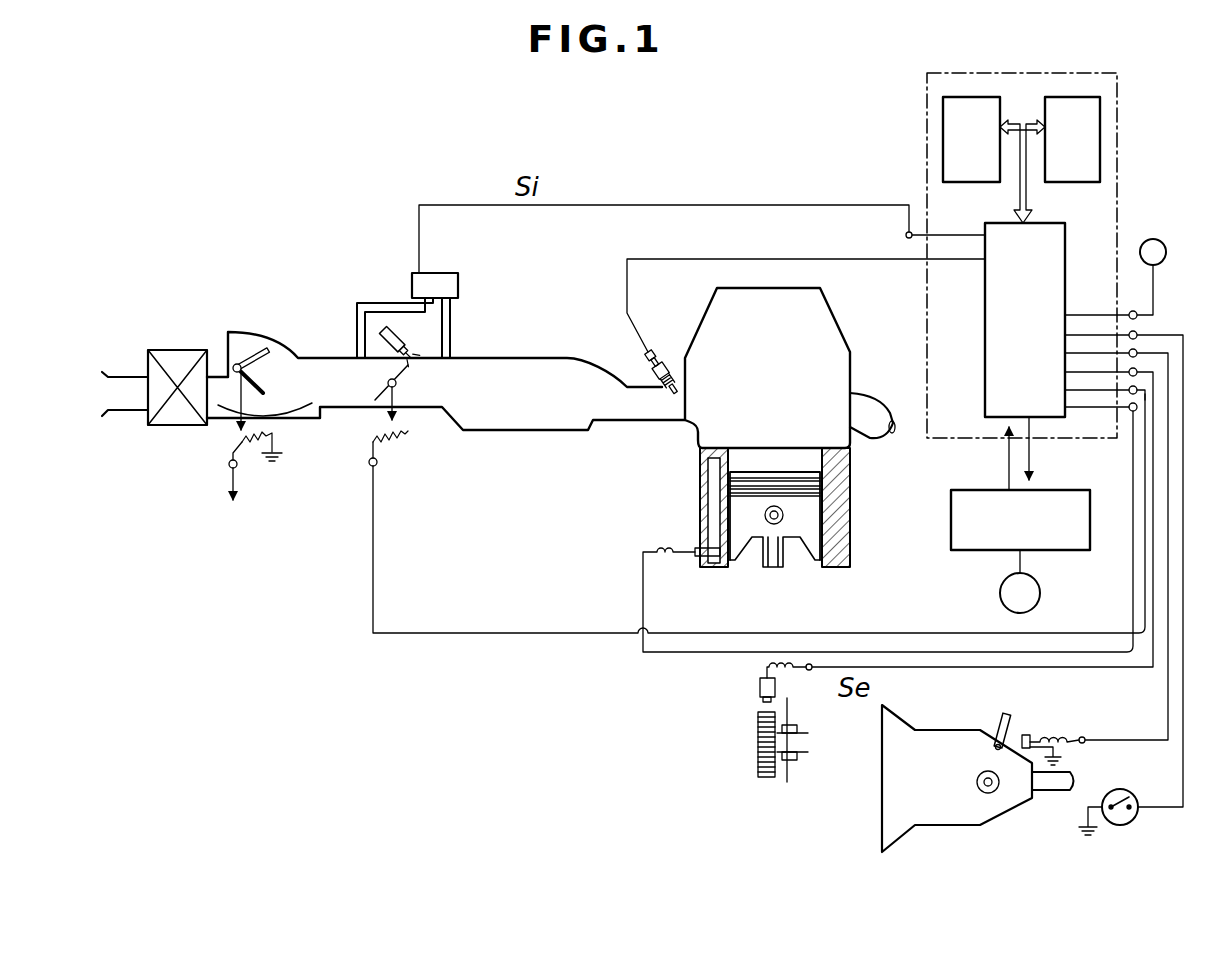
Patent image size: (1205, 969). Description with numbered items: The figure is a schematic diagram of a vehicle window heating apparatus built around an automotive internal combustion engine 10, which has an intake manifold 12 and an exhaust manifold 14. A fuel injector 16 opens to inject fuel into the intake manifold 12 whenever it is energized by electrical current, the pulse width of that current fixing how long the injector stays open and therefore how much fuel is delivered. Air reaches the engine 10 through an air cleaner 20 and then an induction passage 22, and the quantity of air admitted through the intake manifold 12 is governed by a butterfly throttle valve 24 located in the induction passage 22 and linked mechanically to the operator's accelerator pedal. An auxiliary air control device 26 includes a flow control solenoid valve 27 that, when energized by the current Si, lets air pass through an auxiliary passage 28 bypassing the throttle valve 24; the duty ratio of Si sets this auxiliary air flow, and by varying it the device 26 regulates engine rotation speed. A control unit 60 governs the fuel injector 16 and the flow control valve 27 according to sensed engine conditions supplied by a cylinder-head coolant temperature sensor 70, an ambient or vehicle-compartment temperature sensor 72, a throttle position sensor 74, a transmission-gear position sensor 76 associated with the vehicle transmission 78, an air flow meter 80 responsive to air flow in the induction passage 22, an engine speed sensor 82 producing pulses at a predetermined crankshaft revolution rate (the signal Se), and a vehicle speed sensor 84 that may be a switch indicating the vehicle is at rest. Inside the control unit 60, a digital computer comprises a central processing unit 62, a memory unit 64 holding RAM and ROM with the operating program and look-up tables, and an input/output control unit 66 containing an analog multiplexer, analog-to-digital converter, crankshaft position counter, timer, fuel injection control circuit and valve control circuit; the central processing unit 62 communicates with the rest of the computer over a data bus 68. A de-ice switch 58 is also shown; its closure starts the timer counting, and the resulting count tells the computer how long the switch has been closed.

The internal combustion engine 10 is at (851, 353).
The intake manifold 12 is at (648, 431).
The exhaust manifold 14 is at (872, 405).
The fuel injector 16 is at (658, 352).
The air cleaner 20 is at (180, 350).
The induction passage 22 is at (338, 418).
The butterfly throttle valve 24 is at (386, 380).
The auxiliary air control device 26 is at (402, 282).
The flow control solenoid valve 27 is at (445, 273).
The auxiliary passage 28 is at (357, 318).
The de-ice switch 58 is at (1041, 590).
The control unit 60 is at (1025, 72).
The central processing unit 62 is at (972, 97).
The memory unit 64 is at (1075, 97).
The input/output control unit 66 is at (1048, 223).
The data bus 68 is at (1018, 186).
The cylinder-head coolant temperature sensor 70 is at (694, 558).
The ambient or vehicle-compartment temperature sensor 72 is at (1155, 238).
The throttle position sensor 74 is at (405, 437).
The transmission-gear position sensor 76 is at (1026, 735).
The vehicle transmission 78 is at (946, 730).
The air flow meter 80 is at (243, 362).
The engine speed sensor 82 is at (760, 684).
The vehicle speed sensor 84 is at (1128, 790).